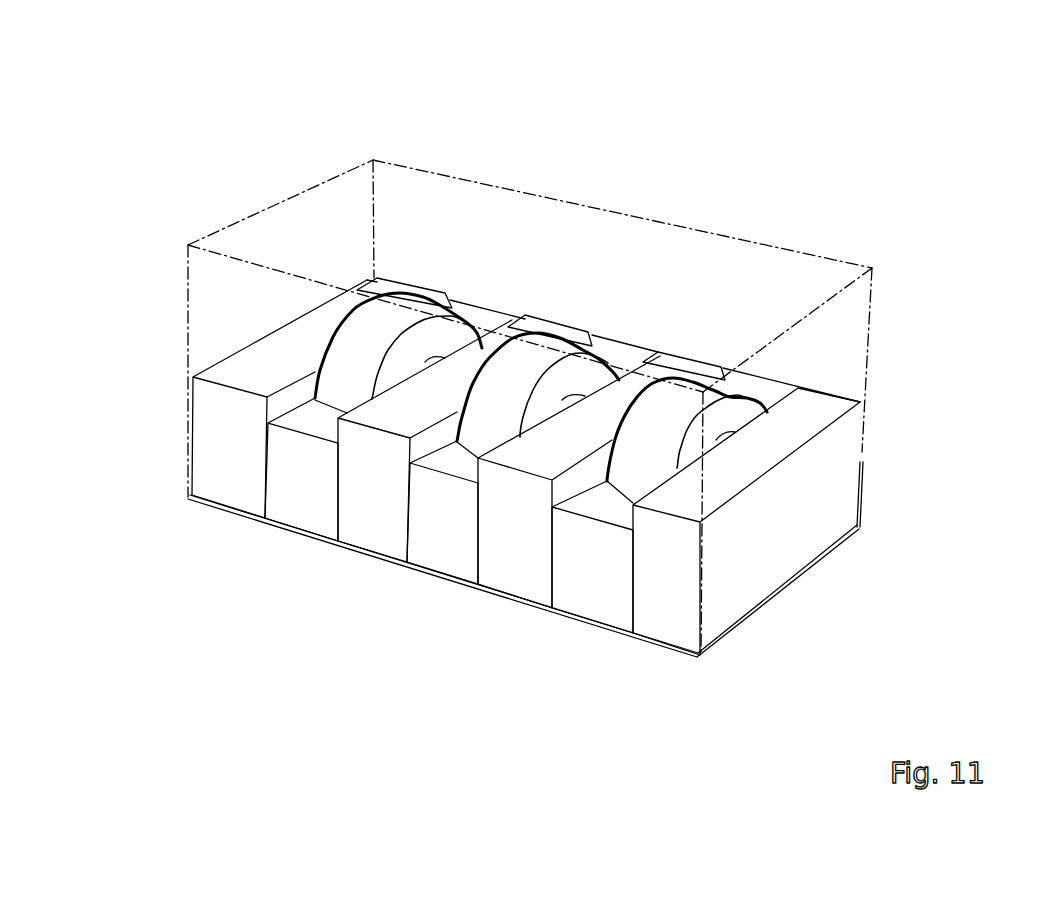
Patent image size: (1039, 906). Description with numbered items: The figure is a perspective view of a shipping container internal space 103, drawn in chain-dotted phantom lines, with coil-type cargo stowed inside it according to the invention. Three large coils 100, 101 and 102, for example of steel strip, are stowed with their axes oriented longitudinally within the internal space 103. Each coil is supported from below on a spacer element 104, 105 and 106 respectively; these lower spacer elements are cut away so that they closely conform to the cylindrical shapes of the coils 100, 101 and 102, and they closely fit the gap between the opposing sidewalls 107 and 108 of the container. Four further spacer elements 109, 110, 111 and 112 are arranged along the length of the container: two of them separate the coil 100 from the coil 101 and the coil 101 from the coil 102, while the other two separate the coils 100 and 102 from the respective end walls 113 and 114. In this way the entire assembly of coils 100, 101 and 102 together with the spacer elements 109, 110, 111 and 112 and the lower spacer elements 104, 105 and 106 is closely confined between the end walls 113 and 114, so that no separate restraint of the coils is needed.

The coil 100 is at (413, 298).
The coil 101 is at (550, 327).
The coil 102 is at (697, 378).
The shipping container internal space 103 is at (288, 238).
The spacer element 104 is at (307, 503).
The spacer element 105 is at (442, 542).
The spacer element 106 is at (592, 572).
The sidewall 107 is at (815, 282).
The sidewall 108 is at (215, 323).
The spacer element 109 is at (220, 482).
The spacer element 110 is at (376, 533).
The spacer element 111 is at (508, 572).
The spacer element 112 is at (667, 610).
The end wall 113 is at (331, 205).
The end wall 114 is at (852, 362).